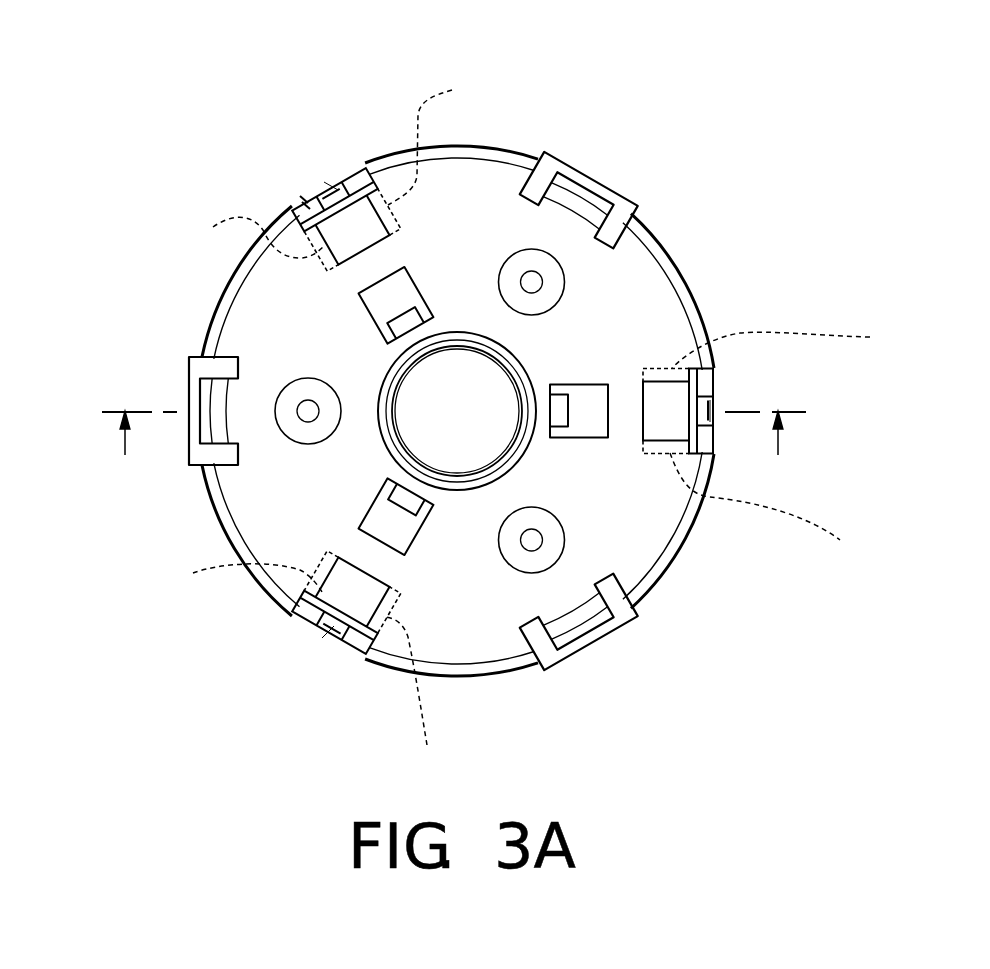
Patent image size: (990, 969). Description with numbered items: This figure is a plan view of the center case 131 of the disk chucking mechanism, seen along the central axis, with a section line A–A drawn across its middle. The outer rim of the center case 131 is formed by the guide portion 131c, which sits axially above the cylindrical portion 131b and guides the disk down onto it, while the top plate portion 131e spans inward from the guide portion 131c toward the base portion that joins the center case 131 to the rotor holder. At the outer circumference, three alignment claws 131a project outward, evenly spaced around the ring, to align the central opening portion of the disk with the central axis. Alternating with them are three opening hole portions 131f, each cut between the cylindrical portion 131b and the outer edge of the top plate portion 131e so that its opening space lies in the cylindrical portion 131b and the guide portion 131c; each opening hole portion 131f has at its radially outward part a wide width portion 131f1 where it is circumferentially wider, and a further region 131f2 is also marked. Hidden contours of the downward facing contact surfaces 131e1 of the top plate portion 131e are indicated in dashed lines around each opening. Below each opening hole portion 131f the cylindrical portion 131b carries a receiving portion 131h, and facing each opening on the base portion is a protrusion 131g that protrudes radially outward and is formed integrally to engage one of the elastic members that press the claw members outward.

The center case 131 is at (63, 66).
The alignment claw 131a is at (593, 173).
The cylindrical portion 131b is at (696, 326).
The guide portion 131c is at (660, 240).
The top plate portion 131e is at (642, 533).
The downward facing contact surface 131e1 is at (532, 435).
The opening hole portion 131f is at (352, 222).
The wide width portion 131f1 is at (304, 205).
The tab second portion 131f2 is at (302, 200).
The protrusion 131g is at (408, 305).
The receiving portion 131h is at (332, 180).
The section line A- A is at (457, 424).